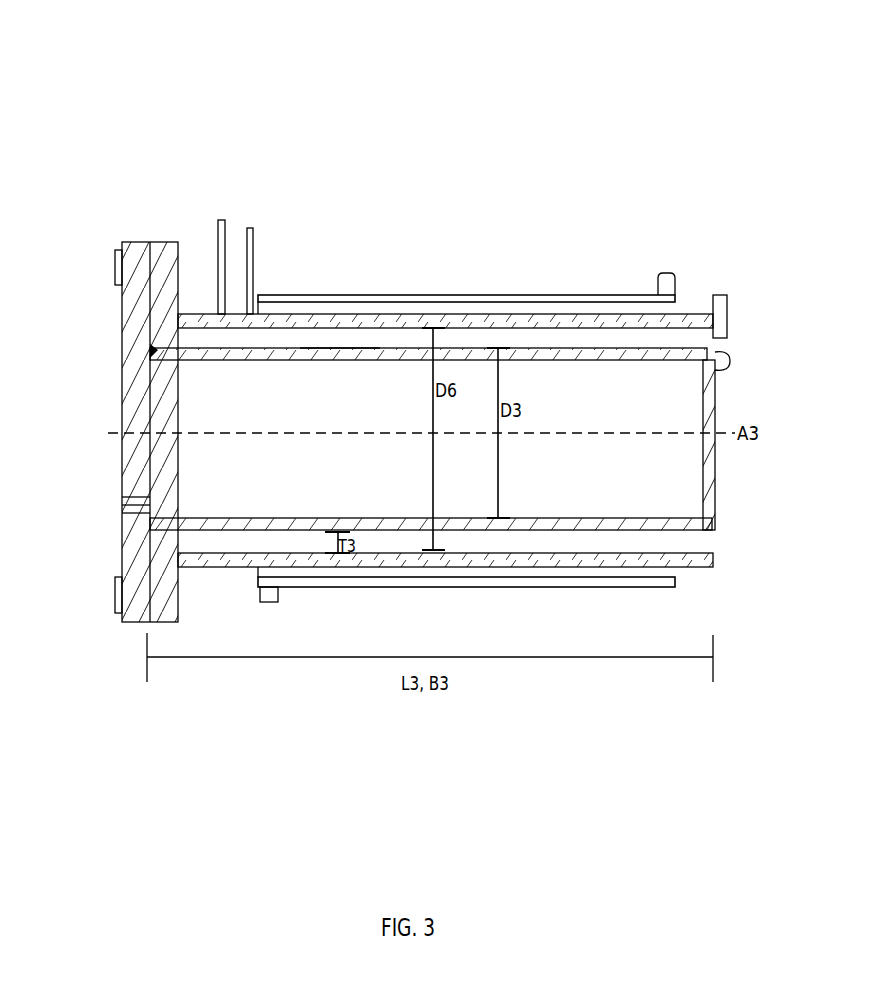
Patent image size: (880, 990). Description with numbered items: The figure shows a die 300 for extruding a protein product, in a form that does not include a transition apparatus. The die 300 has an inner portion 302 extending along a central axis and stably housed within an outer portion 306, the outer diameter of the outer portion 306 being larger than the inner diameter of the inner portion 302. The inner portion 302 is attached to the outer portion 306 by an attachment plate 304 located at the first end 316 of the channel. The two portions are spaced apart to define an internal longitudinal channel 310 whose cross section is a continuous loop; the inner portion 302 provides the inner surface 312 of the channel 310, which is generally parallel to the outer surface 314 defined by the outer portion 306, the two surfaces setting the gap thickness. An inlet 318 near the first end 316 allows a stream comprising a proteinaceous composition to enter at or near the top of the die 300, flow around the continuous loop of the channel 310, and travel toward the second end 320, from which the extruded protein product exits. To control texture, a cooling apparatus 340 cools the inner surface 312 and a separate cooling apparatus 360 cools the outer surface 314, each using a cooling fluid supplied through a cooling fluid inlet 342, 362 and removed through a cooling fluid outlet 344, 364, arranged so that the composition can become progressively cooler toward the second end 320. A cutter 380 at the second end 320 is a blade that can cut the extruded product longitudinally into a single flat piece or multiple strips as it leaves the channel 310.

The die 300 is at (220, 100).
The attachment plate 304 is at (137, 232).
The first end 316 is at (146, 343).
The inlet 318 is at (237, 305).
The outer portion 306 is at (478, 317).
The inner portion 302 is at (400, 352).
The internal longitudinal channel 310 is at (336, 340).
The inner surface 312 is at (567, 532).
The outer surface 314 is at (588, 554).
The cooling apparatus 360 is at (572, 290).
The cooling fluid inlet 362 is at (666, 277).
The cooling fluid outlet 364 is at (272, 598).
The cutter 380 is at (723, 300).
The second end 320 is at (724, 536).
The cooling fluid inlet 342 is at (733, 358).
The cooling apparatus 340 is at (605, 376).
The cooling fluid outlet 344 is at (126, 503).